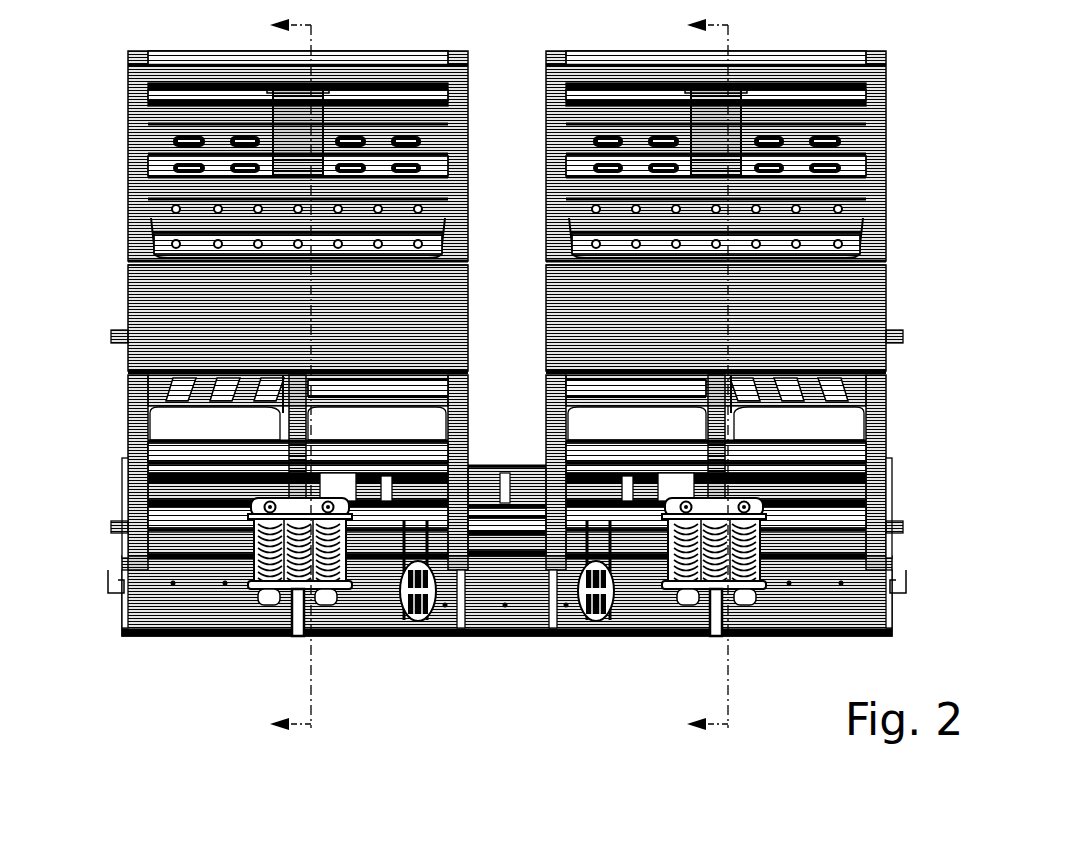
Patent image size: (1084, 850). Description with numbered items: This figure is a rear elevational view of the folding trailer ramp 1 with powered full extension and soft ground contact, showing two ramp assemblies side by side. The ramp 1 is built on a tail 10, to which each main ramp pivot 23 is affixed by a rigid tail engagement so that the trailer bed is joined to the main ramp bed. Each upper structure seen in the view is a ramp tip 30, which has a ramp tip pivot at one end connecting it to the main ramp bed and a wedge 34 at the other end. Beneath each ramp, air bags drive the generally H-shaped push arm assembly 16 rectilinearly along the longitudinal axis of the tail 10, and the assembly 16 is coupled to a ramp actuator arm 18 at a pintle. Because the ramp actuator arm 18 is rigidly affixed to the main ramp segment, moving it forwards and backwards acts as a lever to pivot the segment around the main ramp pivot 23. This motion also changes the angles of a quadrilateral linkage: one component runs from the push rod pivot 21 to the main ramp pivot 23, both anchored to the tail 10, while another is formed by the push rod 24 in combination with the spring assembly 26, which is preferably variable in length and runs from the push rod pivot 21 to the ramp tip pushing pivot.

The folding trailer ramp 1 is at (517, 376).
The tail 10 is at (217, 632).
The push arm assembly 16 is at (418, 628).
The ramp actuator arm 18 is at (395, 628).
The push rod pivot 21 is at (514, 614).
The main ramp pivot 23 is at (882, 541).
The push rod 24 is at (700, 419).
The spring assembly 26 is at (748, 628).
The ramp tip 30 is at (880, 233).
The wedge 34 is at (858, 339).